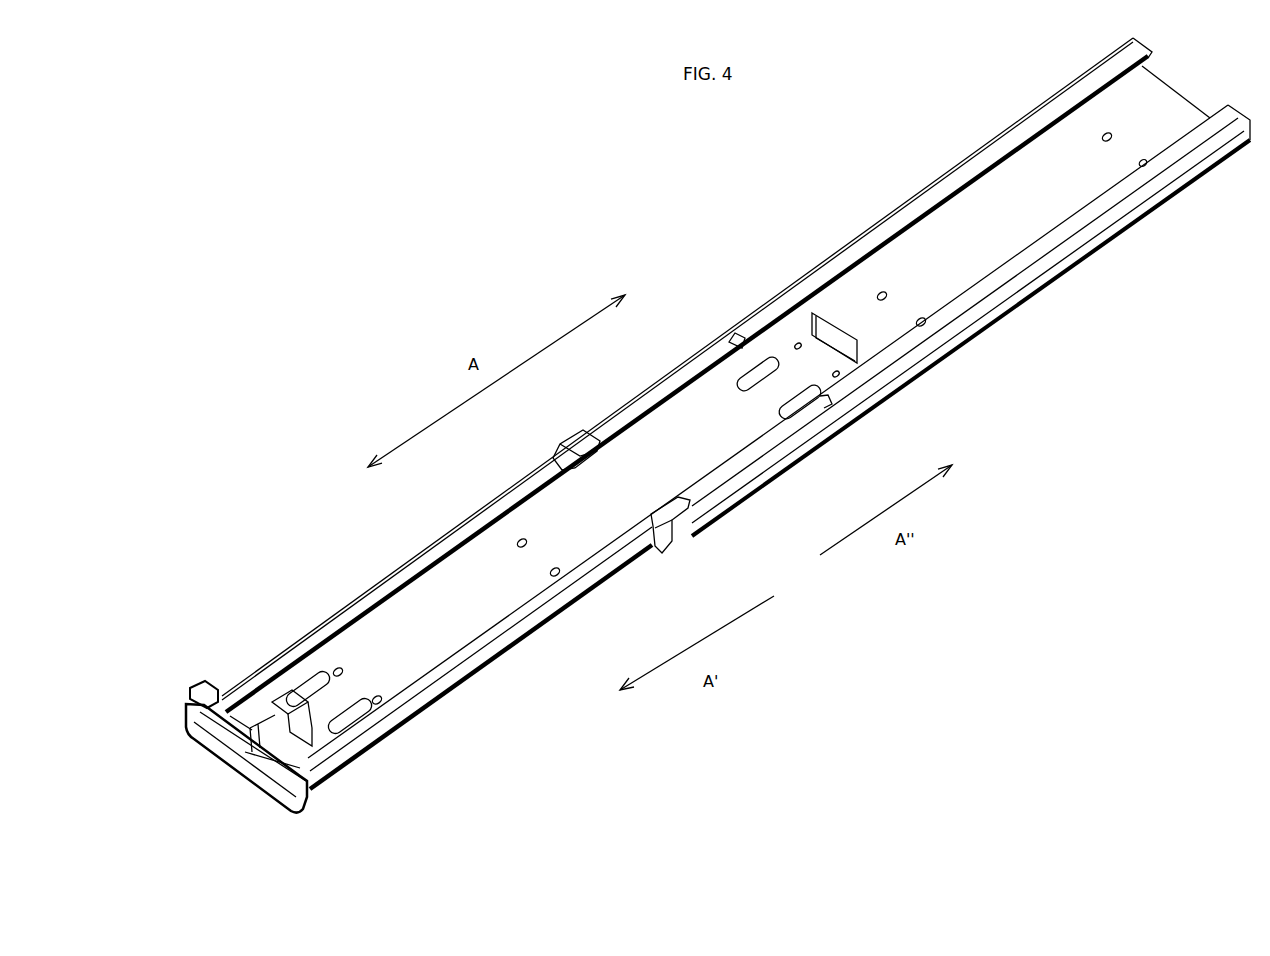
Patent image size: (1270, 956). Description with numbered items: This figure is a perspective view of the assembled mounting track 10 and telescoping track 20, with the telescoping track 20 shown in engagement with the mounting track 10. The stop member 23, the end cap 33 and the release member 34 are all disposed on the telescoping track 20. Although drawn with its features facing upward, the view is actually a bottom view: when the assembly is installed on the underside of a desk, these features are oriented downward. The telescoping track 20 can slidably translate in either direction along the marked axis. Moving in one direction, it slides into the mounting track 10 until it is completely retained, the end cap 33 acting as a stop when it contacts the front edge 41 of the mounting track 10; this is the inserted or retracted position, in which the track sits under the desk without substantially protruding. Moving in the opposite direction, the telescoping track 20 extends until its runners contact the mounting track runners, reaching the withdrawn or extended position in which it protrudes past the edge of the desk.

The mounting track 10 is at (1026, 200).
The telescoping track 20 is at (455, 612).
The stop member 23 is at (821, 322).
The end cap 33 is at (258, 760).
The release member 34 is at (290, 705).
The front edge 41 is at (668, 553).